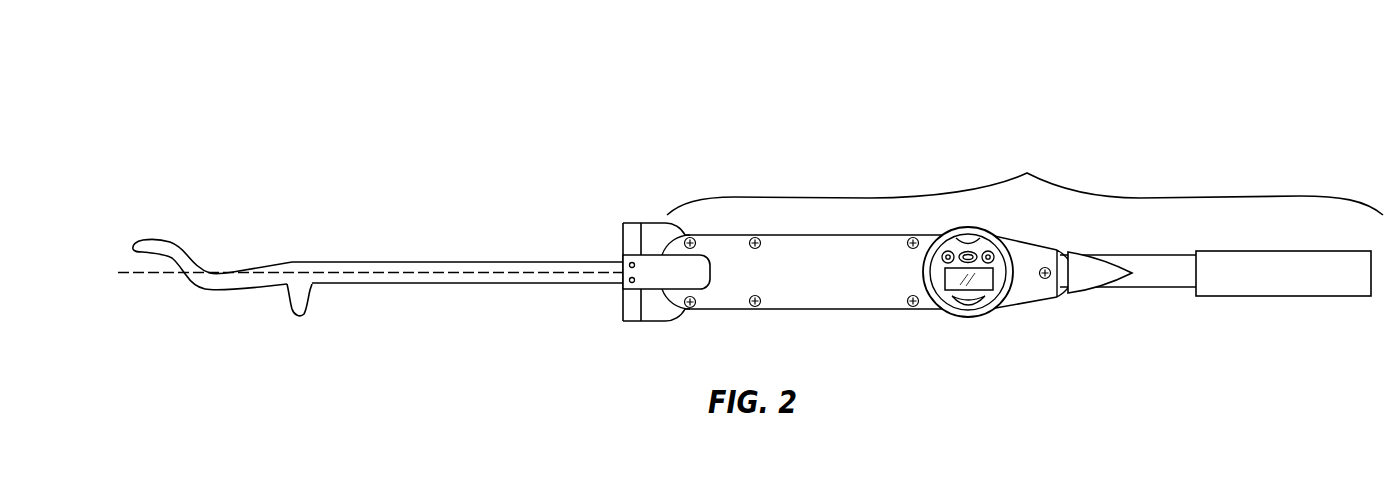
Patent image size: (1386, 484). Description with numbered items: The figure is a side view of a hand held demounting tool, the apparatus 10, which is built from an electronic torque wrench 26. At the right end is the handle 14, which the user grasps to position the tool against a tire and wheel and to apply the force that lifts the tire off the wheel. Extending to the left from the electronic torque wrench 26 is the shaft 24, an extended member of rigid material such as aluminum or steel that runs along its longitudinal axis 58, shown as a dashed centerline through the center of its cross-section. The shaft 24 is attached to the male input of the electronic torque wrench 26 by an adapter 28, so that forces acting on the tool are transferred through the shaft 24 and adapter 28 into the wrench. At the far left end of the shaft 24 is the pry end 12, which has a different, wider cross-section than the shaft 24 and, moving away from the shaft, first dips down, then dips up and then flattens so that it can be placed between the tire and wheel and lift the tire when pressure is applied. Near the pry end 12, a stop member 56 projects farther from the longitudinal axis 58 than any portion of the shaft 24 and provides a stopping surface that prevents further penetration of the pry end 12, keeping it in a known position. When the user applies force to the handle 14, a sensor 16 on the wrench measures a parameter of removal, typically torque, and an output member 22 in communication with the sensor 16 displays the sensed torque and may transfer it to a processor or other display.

The apparatus 10 is at (299, 86).
The pry end 12 is at (186, 253).
The handle 14 is at (1268, 284).
The sensor 16 is at (940, 267).
The output member 22 is at (985, 281).
The shaft 24 is at (517, 284).
The electronic torque wrench 26 is at (1022, 227).
The adapter 28 is at (623, 300).
The stop member 56 is at (293, 302).
The longitudinal axis 58 is at (430, 273).